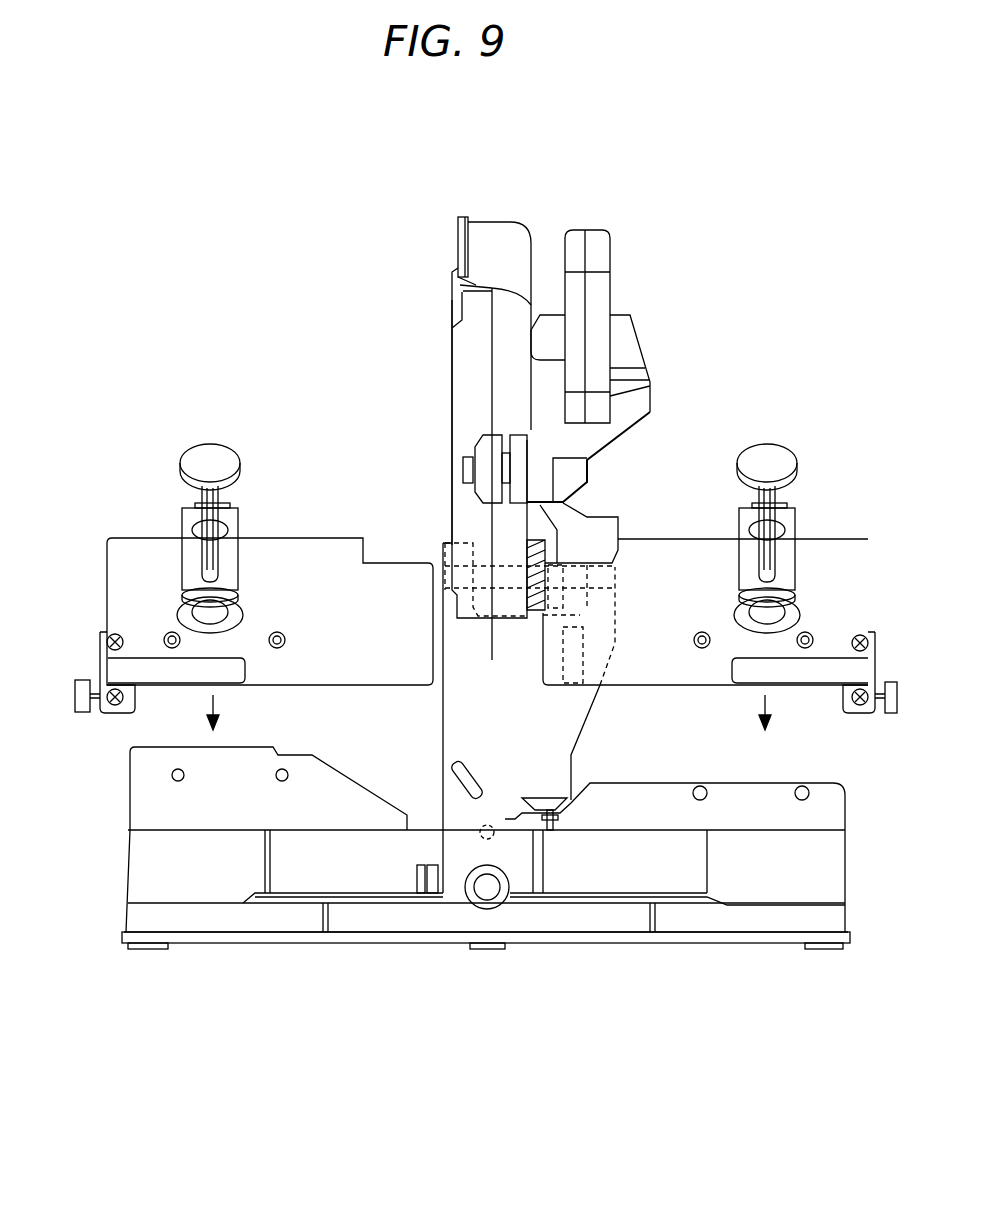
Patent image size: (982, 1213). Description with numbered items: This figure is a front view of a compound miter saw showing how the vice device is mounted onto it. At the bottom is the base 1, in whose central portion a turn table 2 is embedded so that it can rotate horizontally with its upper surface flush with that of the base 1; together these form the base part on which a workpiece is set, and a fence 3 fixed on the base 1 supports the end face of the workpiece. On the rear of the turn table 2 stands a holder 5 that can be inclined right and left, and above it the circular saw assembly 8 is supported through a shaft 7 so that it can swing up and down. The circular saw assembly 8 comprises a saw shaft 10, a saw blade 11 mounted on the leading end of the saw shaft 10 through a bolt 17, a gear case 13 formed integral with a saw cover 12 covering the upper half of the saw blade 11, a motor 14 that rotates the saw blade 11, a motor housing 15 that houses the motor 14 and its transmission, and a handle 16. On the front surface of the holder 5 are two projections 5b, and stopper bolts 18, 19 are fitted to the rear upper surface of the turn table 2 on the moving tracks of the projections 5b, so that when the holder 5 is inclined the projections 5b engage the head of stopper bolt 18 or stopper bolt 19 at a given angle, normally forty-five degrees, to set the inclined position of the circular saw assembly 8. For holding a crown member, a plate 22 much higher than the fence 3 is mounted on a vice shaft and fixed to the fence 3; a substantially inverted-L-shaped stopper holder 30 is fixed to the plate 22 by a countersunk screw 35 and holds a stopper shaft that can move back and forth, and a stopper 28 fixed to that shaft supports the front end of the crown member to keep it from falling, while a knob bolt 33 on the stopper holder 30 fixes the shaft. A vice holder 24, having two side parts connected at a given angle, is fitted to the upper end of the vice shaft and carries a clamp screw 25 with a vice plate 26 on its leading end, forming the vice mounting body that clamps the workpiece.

The base 1 is at (635, 942).
The turn table 2 is at (588, 873).
The fence 3 is at (307, 792).
The holder 5 is at (595, 722).
The projections 5b is at (540, 793).
The shaft 7 is at (445, 552).
The circular saw assembly 8 is at (497, 222).
The saw shaft 10 is at (555, 470).
The saw blade 11 is at (490, 405).
The saw cover 12 is at (455, 340).
The gear case 13 is at (575, 520).
The motor 14 is at (650, 352).
The motor housing 15 is at (625, 432).
The handle 16 is at (612, 240).
The bolt 17 is at (470, 470).
The stopper bolt 18 is at (550, 830).
The stopper bolt 19 is at (452, 830).
The plate 22 is at (337, 545).
The vice holder 24 is at (237, 510).
The clamp screw 25 is at (196, 447).
The vice plate 26 is at (222, 632).
The stopper 28 is at (168, 680).
The stopper holder 30 is at (110, 715).
The knob bolt 33 is at (75, 702).
The countersunk screw 35 is at (110, 637).